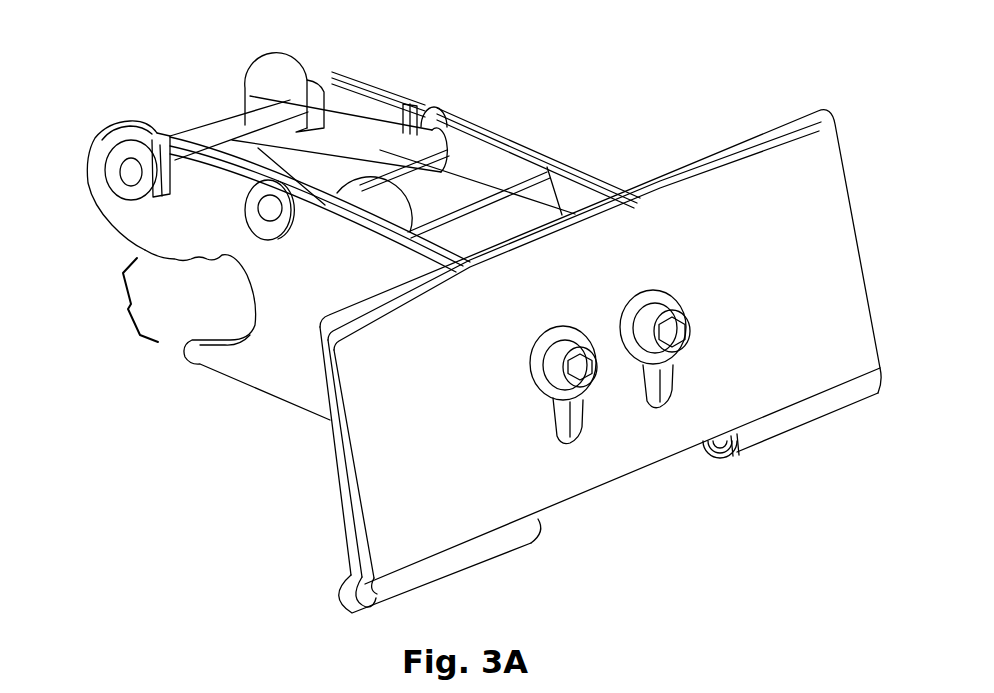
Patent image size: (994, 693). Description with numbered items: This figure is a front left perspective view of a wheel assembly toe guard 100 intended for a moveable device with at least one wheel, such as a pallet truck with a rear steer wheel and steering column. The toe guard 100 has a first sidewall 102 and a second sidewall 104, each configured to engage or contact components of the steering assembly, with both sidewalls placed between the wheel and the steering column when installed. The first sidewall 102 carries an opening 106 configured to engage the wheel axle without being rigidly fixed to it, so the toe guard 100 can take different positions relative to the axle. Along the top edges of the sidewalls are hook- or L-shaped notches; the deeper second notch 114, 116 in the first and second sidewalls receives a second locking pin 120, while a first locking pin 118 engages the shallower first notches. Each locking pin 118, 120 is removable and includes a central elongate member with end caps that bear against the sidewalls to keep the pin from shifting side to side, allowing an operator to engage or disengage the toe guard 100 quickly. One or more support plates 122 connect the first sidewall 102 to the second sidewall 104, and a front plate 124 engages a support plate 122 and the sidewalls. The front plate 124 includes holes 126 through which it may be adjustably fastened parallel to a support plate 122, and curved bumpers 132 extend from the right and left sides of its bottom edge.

The wheel assembly toe guard 100 is at (724, 50).
The first sidewall 102 is at (275, 362).
The second sidewall 104 is at (482, 168).
The opening 106 is at (130, 307).
The second notch 114 is at (163, 133).
The second notch 116 is at (330, 72).
The first locking pin 118 is at (388, 153).
The second locking pin 120 is at (260, 120).
The support plate 122 is at (520, 203).
The front plate 124 is at (772, 337).
The holes 126 is at (563, 418).
The bumper 132 is at (500, 545).